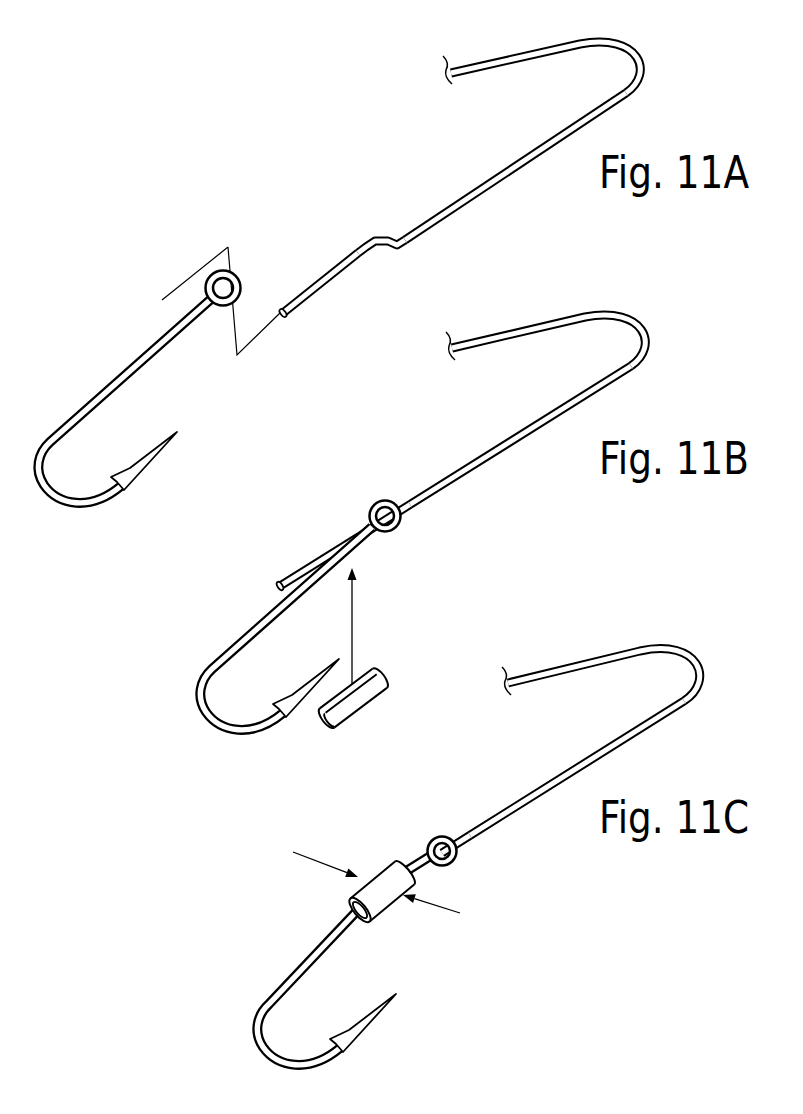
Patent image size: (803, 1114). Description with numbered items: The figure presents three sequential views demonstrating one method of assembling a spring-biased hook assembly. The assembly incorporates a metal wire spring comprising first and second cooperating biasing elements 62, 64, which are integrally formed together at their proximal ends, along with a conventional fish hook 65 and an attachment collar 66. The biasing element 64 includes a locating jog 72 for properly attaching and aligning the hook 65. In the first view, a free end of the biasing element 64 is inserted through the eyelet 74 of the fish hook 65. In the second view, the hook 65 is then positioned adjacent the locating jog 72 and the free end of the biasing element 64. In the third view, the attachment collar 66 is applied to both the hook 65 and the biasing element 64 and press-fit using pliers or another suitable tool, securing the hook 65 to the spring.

In FIG. 11A, the first biasing element 62 is at (506, 57).
In FIG. 11B, the first biasing element 62 is at (550, 317).
In FIG. 11C, the first biasing element 62 is at (632, 650).
In FIG. 11A, the second biasing element 64 is at (470, 188).
In FIG. 11B, the second biasing element 64 is at (515, 440).
In FIG. 11C, the second biasing element 64 is at (633, 733).
In FIG. 11A, the fish hook 65 is at (117, 379).
In FIG. 11B, the fish hook 65 is at (233, 637).
In FIG. 11C, the fish hook 65 is at (285, 974).
In FIG. 11B, the attachment collar 66 is at (372, 700).
In FIG. 11C, the attachment collar 66 is at (383, 872).
In FIG. 11A, the locating jog 72 is at (390, 233).
In FIG. 11B, the locating jog 72 is at (372, 510).
In FIG. 11C, the locating jog 72 is at (433, 843).
In FIG. 11A, the eyelet 74 is at (217, 300).
In FIG. 11B, the eyelet 74 is at (392, 503).
In FIG. 11C, the eyelet 74 is at (442, 847).